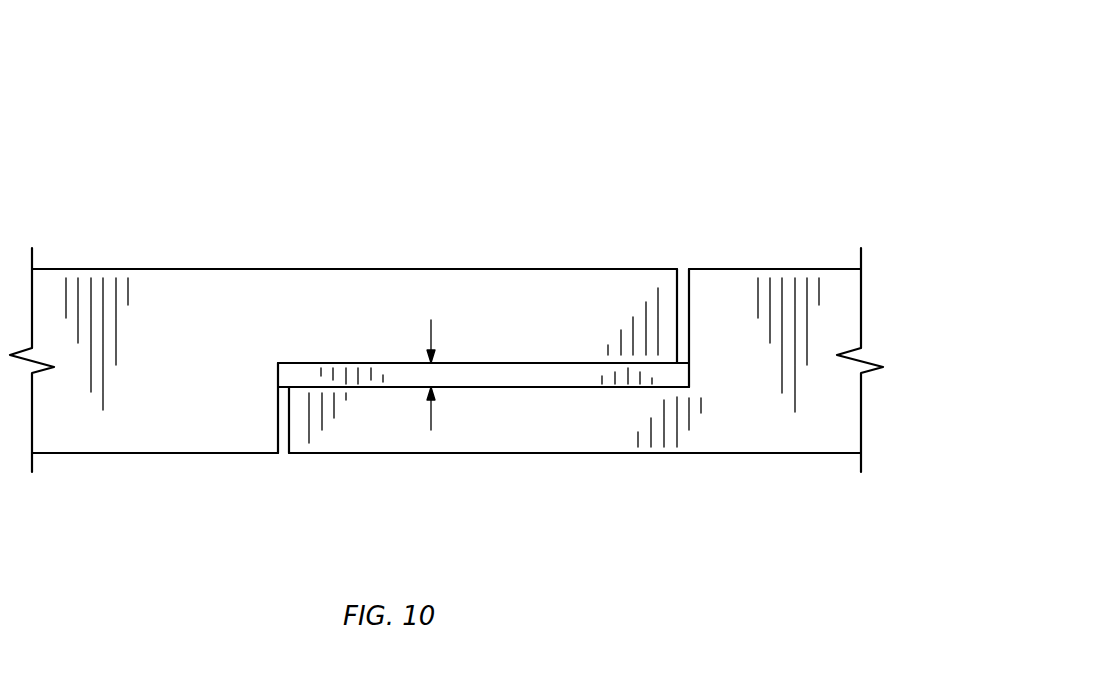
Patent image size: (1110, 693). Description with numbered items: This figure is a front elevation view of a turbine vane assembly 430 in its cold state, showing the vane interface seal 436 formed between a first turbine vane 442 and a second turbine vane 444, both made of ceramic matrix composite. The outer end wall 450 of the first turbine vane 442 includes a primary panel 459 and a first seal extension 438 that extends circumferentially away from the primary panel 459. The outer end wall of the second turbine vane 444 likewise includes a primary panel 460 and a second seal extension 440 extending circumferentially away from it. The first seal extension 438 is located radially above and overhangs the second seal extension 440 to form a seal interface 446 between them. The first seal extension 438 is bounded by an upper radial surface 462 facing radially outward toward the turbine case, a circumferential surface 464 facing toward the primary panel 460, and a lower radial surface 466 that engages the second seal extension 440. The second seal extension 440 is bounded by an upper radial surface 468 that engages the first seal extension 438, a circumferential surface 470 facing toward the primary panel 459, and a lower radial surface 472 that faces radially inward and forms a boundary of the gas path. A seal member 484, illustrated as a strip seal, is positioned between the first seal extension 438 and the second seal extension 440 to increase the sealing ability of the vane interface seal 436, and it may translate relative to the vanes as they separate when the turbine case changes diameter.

The turbine vane assembly 430 is at (793, 135).
The vane interface seal 436 is at (475, 132).
The first seal extension 438 is at (352, 280).
The second seal extension 440 is at (483, 453).
The first turbine vane 442 is at (195, 152).
The second turbine vane 444 is at (693, 495).
The seal interface 446 is at (431, 327).
The outer end wall 450 is at (155, 185).
The primary panel 459 is at (209, 280).
The primary panel 460 is at (733, 440).
The upper radial surface 462 is at (455, 269).
The circumferential surface 464 is at (680, 295).
The lower radial surface 466 is at (480, 363).
The upper radial surface 468 is at (553, 387).
The circumferential surface 470 is at (289, 418).
The lower radial surface 472 is at (377, 453).
The seal member 484 is at (662, 377).